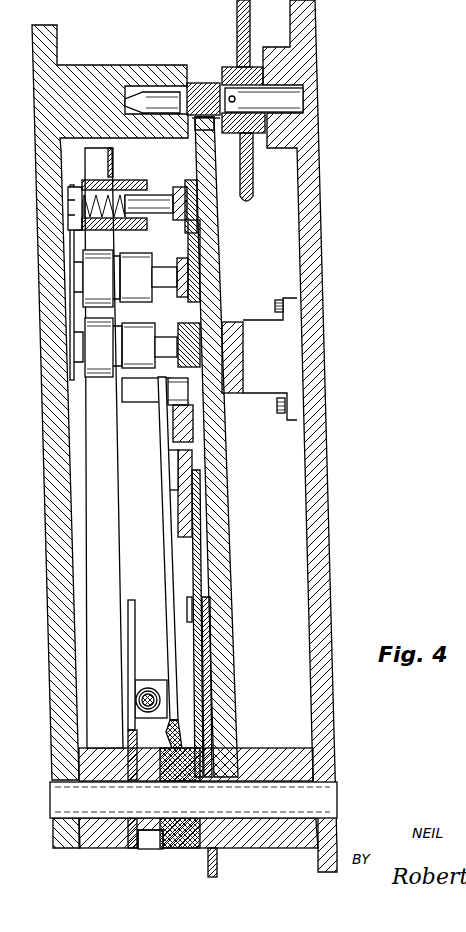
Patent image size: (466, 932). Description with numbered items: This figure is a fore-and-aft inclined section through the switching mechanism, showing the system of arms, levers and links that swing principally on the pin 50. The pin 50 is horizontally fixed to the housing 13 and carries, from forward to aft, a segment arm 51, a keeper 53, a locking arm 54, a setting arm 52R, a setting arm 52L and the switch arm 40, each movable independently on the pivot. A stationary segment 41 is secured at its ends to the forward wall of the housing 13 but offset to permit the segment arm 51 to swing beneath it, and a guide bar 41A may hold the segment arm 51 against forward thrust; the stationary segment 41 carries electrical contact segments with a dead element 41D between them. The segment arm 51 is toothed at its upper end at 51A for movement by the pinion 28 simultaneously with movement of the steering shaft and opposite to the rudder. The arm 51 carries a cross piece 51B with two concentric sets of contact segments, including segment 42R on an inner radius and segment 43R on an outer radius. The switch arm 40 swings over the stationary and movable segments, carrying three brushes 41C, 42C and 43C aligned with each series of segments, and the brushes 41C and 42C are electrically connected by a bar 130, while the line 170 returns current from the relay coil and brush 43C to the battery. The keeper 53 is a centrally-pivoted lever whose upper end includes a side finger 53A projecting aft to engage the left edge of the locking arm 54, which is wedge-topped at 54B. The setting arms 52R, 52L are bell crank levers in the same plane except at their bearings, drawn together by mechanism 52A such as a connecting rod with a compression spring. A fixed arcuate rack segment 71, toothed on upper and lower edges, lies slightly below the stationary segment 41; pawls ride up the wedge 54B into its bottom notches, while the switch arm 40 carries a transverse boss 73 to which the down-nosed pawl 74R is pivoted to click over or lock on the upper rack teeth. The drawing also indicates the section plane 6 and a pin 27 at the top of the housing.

The housing 13 is at (48, 404).
The pinion 28 is at (207, 82).
The pin 27 is at (253, 175).
The segment arm 51 is at (216, 250).
The toothed upper end 51A is at (194, 148).
The cross piece 51B is at (187, 236).
The switch arm 40 is at (105, 575).
The bar 130 is at (72, 316).
The line 170 is at (82, 232).
The brush 43C is at (158, 192).
The contact segment 43R is at (198, 216).
The brush 42C is at (150, 270).
The contact segment 42R is at (213, 273).
The brush 41C is at (150, 340).
The dead element 41D is at (188, 328).
The stationary segment 41 is at (216, 301).
The guide bar 41A is at (236, 347).
The down-nosed pawl 74R is at (214, 402).
The transverse boss 73 is at (143, 390).
The arcuate rack segment 71 is at (172, 434).
The wedge top 54B is at (216, 463).
The locking arm 54 is at (200, 557).
The side finger 53A is at (186, 608).
The keeper 53 is at (206, 633).
The connecting mechanism 52A is at (147, 688).
The setting arm 52R is at (190, 730).
The setting arm 52L is at (130, 740).
The pin 50 is at (322, 787).
The section line 6 is at (68, 262).